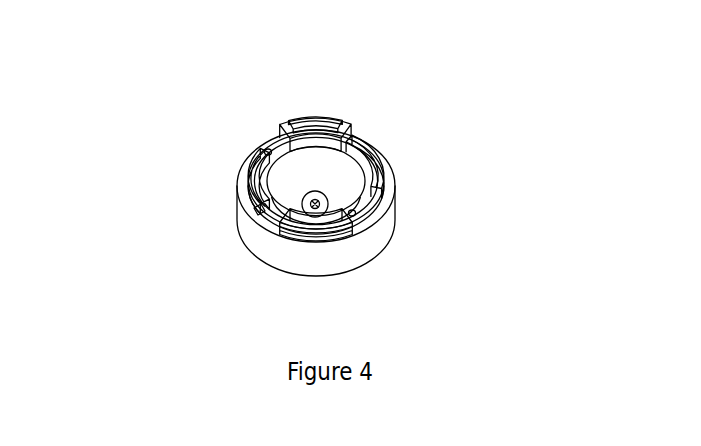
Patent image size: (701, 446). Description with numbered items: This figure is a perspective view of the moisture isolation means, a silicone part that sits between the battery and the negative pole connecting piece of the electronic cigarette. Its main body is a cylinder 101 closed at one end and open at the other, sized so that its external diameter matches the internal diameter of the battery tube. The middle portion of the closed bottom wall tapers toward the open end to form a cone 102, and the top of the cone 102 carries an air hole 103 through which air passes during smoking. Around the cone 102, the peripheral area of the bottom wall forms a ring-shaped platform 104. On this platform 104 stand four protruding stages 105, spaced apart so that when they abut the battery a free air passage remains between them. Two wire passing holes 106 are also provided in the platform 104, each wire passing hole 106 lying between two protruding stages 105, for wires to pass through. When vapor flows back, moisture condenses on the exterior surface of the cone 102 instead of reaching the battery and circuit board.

The cylinder 101 is at (327, 260).
The cone 102 is at (307, 172).
The air hole 103 is at (317, 200).
The ring-shaped platform 104 is at (258, 221).
The protruding stages 105 is at (301, 127).
The wire passing holes 106 is at (264, 149).